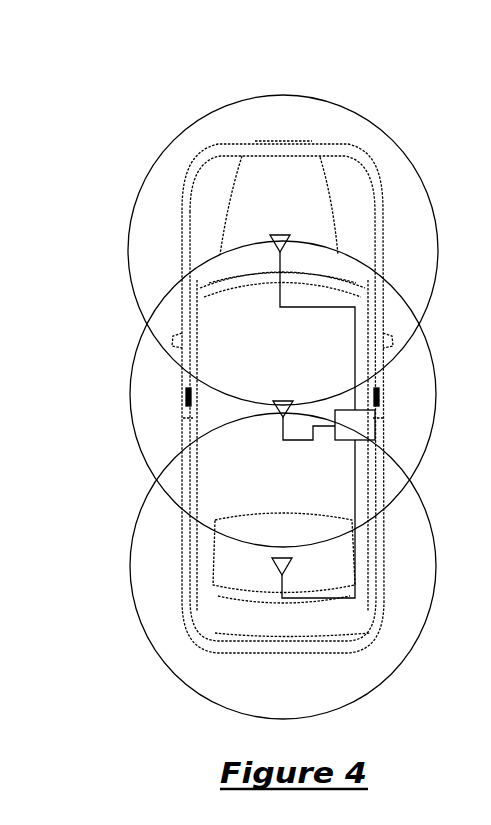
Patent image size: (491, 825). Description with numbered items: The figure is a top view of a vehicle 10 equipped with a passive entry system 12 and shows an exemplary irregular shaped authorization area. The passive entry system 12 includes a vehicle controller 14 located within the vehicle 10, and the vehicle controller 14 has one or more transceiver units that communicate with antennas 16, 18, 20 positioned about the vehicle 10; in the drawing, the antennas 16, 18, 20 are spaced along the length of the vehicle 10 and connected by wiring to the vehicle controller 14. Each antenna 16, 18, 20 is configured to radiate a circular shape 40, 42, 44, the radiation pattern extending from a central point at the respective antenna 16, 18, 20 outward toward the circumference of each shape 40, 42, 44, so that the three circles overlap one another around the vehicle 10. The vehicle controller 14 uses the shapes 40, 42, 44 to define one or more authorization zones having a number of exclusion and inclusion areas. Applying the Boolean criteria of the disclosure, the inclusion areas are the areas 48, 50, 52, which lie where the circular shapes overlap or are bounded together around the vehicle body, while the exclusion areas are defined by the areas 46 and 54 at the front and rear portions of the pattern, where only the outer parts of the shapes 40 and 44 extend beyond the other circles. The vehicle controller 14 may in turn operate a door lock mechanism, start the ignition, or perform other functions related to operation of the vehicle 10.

The vehicle 10 is at (314, 132).
The passive entry system 12 is at (160, 96).
The vehicle controller 14 is at (335, 440).
The antenna 16 is at (273, 236).
The antenna 18 is at (273, 401).
The antenna 20 is at (275, 558).
The circular shape 40 is at (128, 250).
The circular shape 42 is at (140, 334).
The circular shape 44 is at (128, 564).
The exclusion area 46 is at (163, 182).
The inclusion area 48 is at (330, 349).
The inclusion area 50 is at (150, 411).
The inclusion area 52 is at (197, 470).
The exclusion area 54 is at (150, 526).